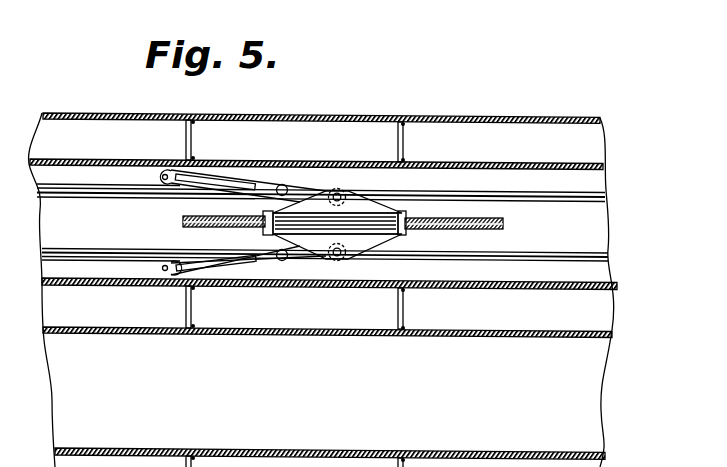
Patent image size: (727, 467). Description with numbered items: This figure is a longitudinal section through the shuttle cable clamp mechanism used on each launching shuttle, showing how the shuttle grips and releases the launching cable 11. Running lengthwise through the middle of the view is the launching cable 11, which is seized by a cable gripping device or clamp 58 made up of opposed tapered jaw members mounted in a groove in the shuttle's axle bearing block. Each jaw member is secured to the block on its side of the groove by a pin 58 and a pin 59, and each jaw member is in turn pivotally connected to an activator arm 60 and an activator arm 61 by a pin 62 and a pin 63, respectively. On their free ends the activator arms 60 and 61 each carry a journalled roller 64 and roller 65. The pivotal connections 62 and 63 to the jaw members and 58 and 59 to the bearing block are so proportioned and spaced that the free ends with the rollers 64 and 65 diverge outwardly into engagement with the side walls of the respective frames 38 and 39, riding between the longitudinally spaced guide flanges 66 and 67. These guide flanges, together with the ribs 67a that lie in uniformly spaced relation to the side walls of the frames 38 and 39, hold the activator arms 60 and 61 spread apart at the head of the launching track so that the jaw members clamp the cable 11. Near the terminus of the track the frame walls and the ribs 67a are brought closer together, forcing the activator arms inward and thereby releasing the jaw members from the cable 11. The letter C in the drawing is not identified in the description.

The launching cable 11 is at (506, 224).
The frame 38 is at (497, 151).
The frame 39 is at (532, 337).
The pin 58 is at (285, 184).
The pin 59 is at (283, 261).
The activator arm 60 is at (223, 177).
The activator arm 61 is at (232, 263).
The pin 62 is at (343, 191).
The pin 63 is at (338, 258).
The roller 64 is at (161, 170).
The roller 65 is at (160, 262).
The guide flange 66 is at (585, 187).
The guide flange 67 is at (590, 273).
The rib 67a is at (72, 190).
The turnbuckle coupling C is at (357, 204).